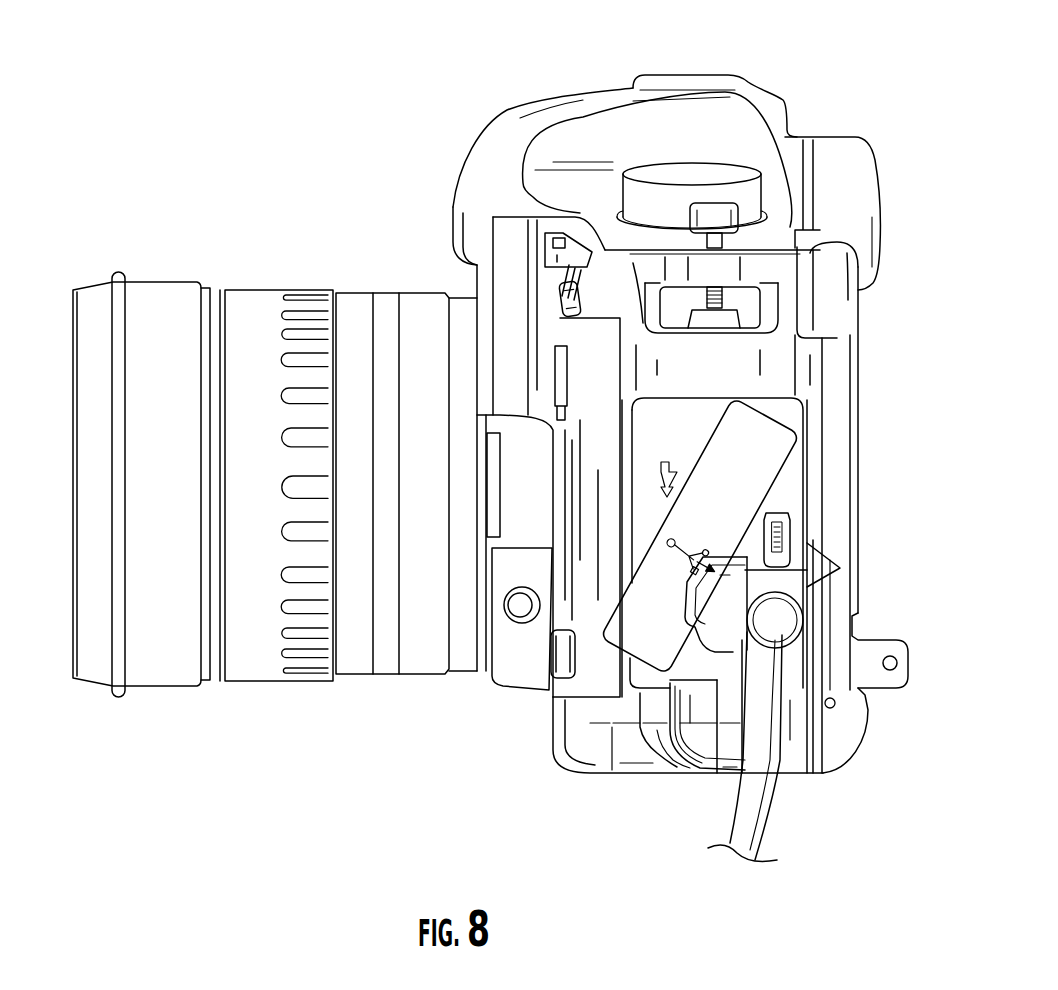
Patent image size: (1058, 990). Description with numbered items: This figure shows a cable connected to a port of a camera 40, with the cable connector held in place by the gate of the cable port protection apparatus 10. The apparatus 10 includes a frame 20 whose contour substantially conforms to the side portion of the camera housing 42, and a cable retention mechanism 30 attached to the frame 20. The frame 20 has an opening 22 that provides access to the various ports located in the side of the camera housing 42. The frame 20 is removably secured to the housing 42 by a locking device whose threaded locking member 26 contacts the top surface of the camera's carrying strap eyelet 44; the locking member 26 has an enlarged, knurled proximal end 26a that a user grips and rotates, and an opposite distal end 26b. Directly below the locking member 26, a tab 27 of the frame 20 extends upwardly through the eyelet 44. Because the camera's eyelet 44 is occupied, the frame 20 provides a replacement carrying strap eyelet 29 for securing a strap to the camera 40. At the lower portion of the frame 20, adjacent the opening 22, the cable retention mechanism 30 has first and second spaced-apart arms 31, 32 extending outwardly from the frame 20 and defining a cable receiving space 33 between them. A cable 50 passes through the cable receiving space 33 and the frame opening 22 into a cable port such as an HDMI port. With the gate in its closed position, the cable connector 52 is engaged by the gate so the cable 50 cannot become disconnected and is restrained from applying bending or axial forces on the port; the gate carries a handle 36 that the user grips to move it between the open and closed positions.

The cable port protection apparatus 10 is at (865, 330).
The frame 20 is at (850, 470).
The opening 22 is at (800, 437).
The threaded locking member 26 is at (718, 218).
The proximal end 26a is at (688, 210).
The distal end 26b is at (718, 310).
The tab 27 is at (693, 320).
The carrying strap eyelet 29 is at (543, 257).
The cable retention mechanism 30 is at (876, 742).
The first arm 31 is at (708, 765).
The second arm 32 is at (815, 757).
The cable receiving space 33 is at (788, 737).
The handle 36 is at (900, 640).
The camera 40 is at (841, 98).
The camera housing 42 is at (580, 213).
The carrying strap eyelet 44 is at (740, 326).
The cable 50 is at (727, 847).
The cable connector 52 is at (795, 600).